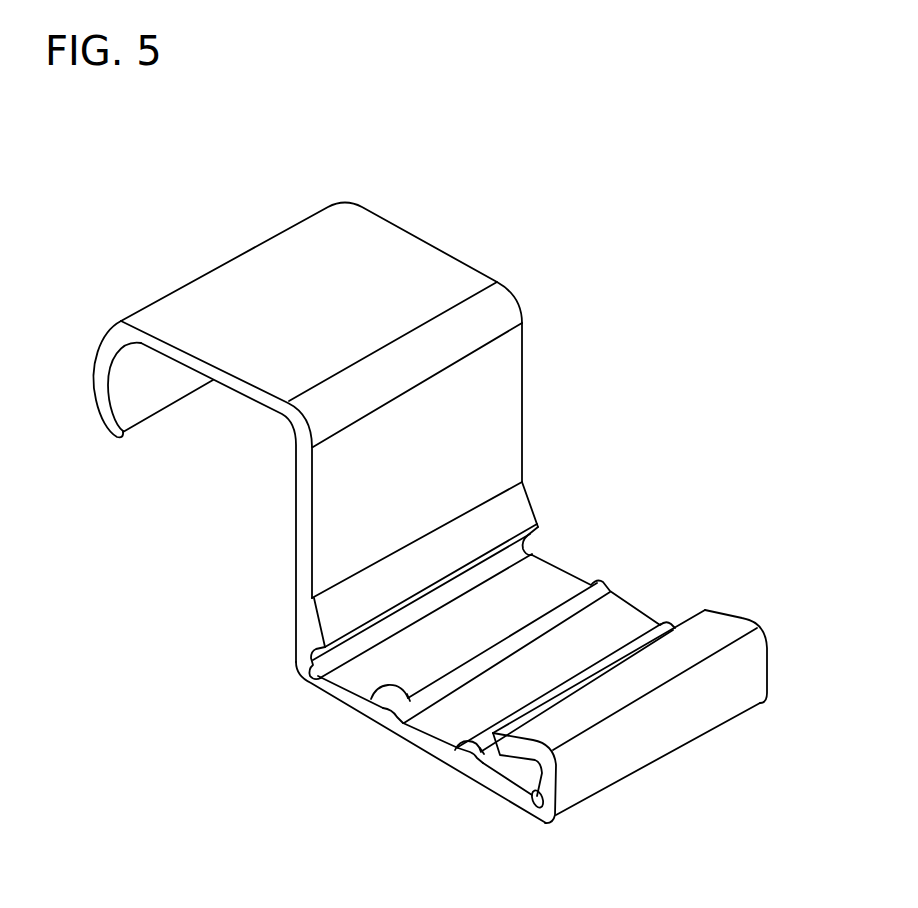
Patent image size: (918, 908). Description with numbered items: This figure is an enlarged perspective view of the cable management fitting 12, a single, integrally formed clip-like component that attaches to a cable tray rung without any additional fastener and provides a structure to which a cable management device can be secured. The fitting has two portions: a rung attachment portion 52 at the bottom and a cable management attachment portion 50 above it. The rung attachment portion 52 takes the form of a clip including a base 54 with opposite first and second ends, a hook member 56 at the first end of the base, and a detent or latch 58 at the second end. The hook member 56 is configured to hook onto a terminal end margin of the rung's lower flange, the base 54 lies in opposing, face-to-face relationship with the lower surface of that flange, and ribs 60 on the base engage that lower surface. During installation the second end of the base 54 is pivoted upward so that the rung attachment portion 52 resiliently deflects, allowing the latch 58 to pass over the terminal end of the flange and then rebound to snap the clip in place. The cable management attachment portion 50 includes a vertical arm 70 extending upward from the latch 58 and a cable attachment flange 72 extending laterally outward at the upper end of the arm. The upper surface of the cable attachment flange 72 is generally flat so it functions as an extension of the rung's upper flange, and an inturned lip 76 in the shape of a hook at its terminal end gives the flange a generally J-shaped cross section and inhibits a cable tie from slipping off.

The cable management fitting 12 is at (600, 202).
The cable management attachment portion 50 is at (533, 298).
The cable attachment flange 72 is at (379, 253).
The vertical arm 70 is at (480, 416).
The inturned lip 76 is at (105, 405).
The latch 58 is at (338, 617).
The rung attachment portion 52 is at (400, 758).
The base 54 is at (540, 587).
The ribs 60 is at (380, 690).
The hook member 56 is at (735, 643).